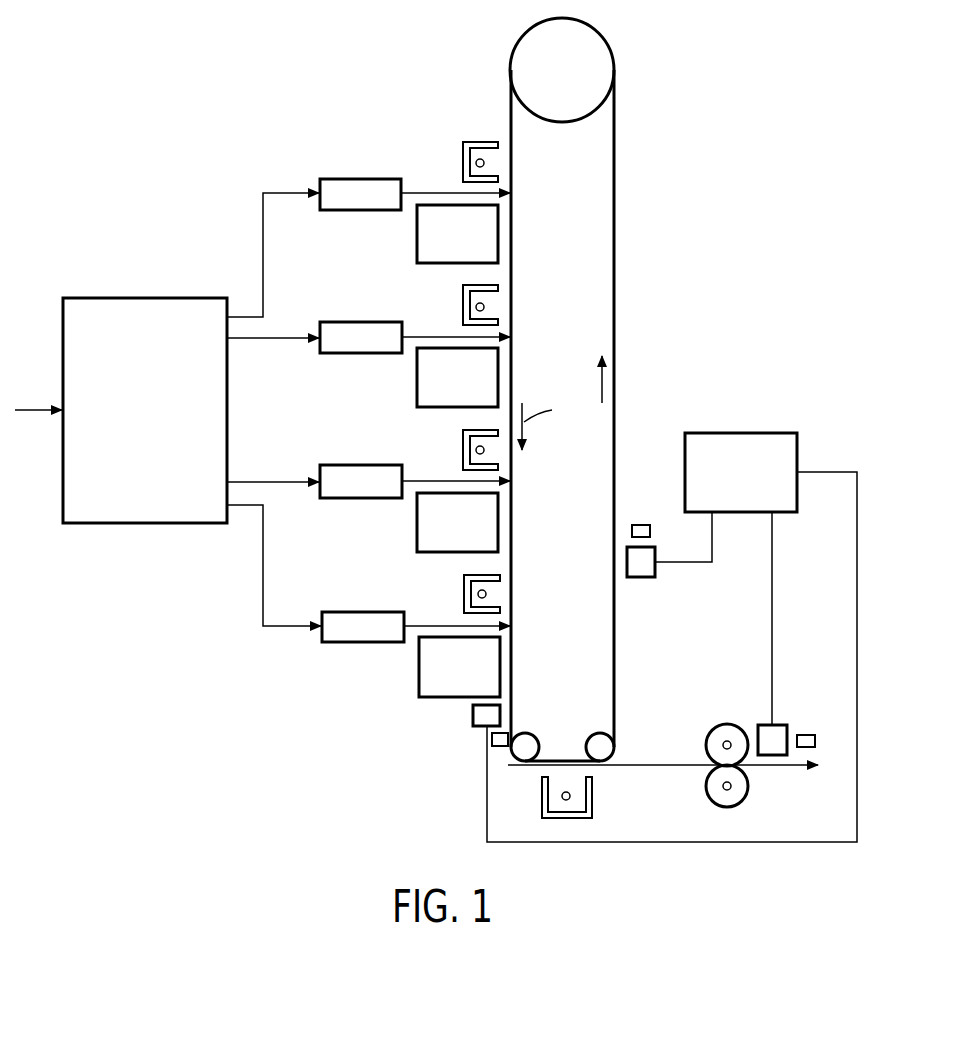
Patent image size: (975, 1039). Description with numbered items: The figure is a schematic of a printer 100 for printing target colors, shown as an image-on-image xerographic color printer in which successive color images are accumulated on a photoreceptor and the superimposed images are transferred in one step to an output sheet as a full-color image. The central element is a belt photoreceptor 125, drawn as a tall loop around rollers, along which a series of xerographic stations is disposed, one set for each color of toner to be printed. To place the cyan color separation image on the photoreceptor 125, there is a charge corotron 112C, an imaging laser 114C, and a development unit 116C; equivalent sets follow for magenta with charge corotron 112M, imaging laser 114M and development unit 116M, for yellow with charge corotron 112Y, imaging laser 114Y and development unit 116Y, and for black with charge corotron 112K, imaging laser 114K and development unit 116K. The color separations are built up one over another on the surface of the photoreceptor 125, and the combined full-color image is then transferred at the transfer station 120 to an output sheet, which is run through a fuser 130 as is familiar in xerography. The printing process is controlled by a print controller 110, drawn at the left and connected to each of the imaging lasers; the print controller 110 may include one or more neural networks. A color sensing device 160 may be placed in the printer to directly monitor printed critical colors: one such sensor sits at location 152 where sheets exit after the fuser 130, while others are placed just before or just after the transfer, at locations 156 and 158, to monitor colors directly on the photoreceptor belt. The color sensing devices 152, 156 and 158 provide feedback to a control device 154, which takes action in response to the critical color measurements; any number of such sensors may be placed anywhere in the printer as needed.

The printer 100 is at (126, 44).
The print controller 110 is at (128, 298).
The charge corotron 112C is at (462, 168).
The charge corotron 112M is at (462, 313).
The charge corotron 112Y is at (462, 457).
The charge corotron 112K is at (463, 600).
The imaging laser 114C is at (330, 178).
The imaging laser 114M is at (333, 322).
The imaging laser 114Y is at (333, 465).
The imaging laser 114K is at (333, 612).
The development unit 116C is at (417, 252).
The development unit 116M is at (417, 395).
The development unit 116Y is at (417, 540).
The development unit 116K is at (419, 685).
The transfer station 120 is at (611, 783).
The belt photoreceptor 125 is at (615, 298).
The fuser 130 is at (713, 716).
The color sensing device 152 is at (785, 725).
The control device 154 is at (730, 433).
The color sensing device 156 is at (640, 578).
The color sensing device 158 is at (472, 713).
The color sensing device 160 is at (644, 525).